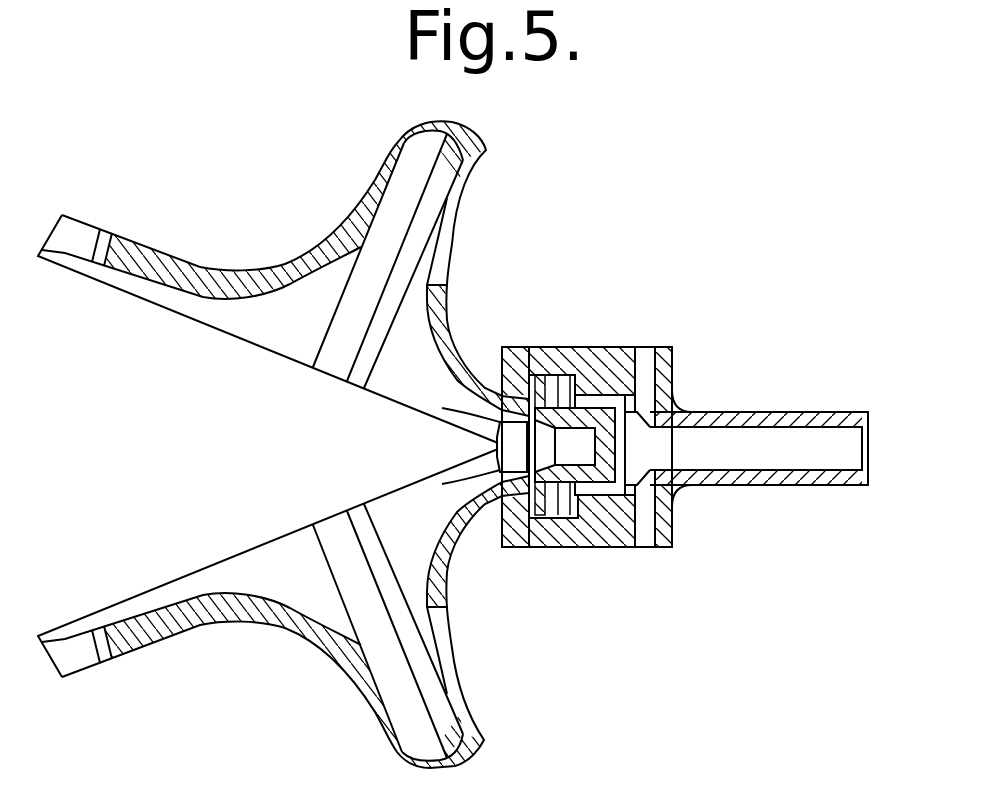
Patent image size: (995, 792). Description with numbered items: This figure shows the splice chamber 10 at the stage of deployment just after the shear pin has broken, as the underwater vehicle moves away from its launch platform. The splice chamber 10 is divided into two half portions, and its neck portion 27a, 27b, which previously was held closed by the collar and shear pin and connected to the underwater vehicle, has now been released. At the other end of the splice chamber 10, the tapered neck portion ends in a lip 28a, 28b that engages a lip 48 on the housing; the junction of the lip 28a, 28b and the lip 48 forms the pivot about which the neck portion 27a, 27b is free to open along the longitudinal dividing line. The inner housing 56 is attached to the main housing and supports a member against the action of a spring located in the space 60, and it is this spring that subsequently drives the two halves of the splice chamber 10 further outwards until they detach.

The splice chamber 10 is at (507, 133).
The neck portion 27a is at (133, 253).
The neck portion 27b is at (155, 643).
The lip 28a is at (462, 406).
The lip 28b is at (474, 520).
The lip 48 is at (497, 347).
The inner housing 56 is at (764, 413).
The space 60 is at (595, 545).